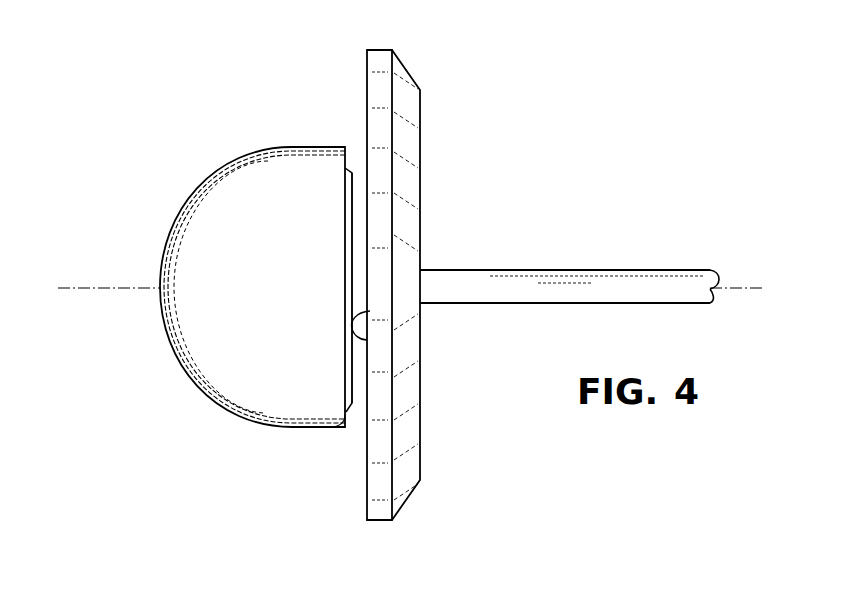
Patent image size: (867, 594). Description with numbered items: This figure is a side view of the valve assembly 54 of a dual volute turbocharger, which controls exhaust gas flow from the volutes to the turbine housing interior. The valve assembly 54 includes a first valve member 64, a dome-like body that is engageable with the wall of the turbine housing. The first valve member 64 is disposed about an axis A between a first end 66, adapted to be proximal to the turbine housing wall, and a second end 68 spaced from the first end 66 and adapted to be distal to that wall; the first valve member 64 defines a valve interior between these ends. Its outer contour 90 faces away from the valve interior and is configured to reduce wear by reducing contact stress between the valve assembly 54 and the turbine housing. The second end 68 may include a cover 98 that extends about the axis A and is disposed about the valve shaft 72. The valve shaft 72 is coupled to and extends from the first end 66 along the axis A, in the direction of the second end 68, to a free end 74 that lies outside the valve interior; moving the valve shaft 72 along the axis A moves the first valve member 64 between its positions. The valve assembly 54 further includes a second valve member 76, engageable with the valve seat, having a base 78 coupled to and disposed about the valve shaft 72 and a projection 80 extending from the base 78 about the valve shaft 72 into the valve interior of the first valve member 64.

The valve assembly 54 is at (145, 114).
The first valve member 64 is at (202, 243).
The first end 66 is at (161, 313).
The second end 68 is at (353, 375).
The valve shaft 72 is at (493, 285).
The free end 74 is at (712, 291).
The second valve member 76 is at (420, 140).
The base 78 is at (377, 89).
The projection 80 is at (359, 250).
The outer contour 90 is at (231, 197).
The cover 98 is at (370, 311).
The axis A is at (740, 288).